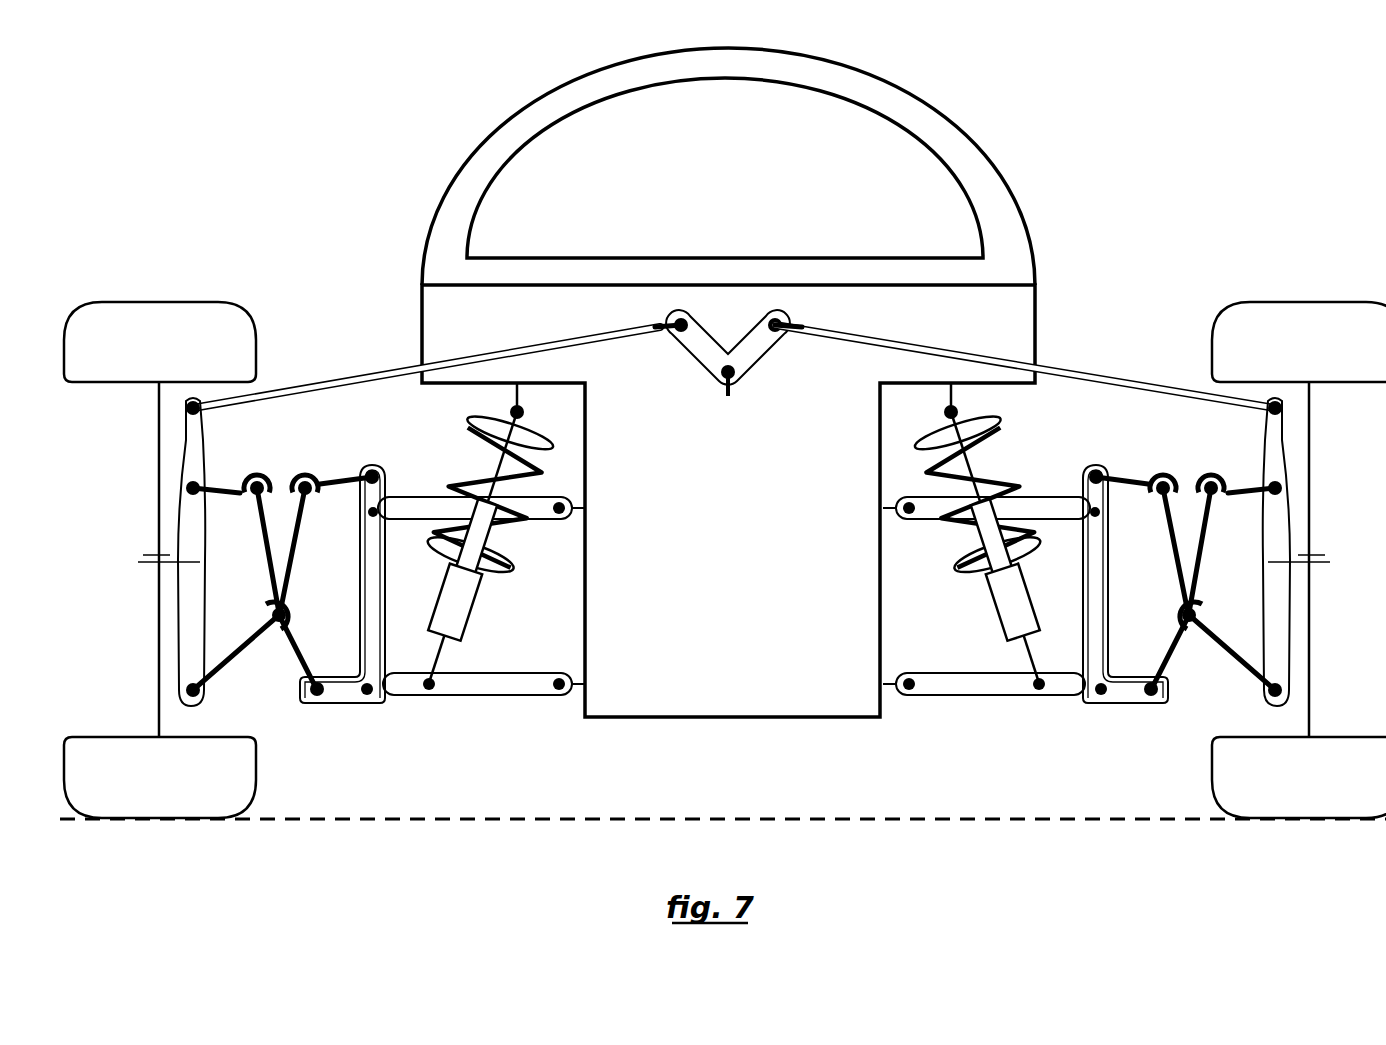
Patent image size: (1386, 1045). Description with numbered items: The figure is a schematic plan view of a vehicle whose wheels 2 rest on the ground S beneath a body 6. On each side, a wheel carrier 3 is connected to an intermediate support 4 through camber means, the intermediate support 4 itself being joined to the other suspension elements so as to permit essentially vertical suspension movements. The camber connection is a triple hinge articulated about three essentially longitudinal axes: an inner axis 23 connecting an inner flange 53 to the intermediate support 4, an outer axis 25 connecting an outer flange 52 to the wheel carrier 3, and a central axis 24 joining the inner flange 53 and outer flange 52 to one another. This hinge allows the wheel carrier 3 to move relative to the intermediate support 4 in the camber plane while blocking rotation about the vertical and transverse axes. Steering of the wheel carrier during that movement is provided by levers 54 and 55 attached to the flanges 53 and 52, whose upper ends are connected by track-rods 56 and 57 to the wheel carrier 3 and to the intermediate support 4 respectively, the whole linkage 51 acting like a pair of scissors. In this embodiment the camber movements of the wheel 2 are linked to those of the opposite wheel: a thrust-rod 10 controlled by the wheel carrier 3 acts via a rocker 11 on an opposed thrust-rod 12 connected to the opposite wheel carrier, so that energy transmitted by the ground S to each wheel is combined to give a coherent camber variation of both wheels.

The wheel 2 is at (157, 668).
The wheel carrier 3 is at (183, 602).
The intermediate support 4 is at (373, 648).
The vehicle body / cabin 6 is at (711, 189).
The thrust-rod 10 is at (560, 346).
The rocker 11 is at (762, 350).
The opposed thrust-rod 12 is at (940, 346).
The inner axis 23 is at (327, 698).
The central axis 24 is at (300, 620).
The outer axis 25 is at (185, 690).
The articulated linkage assembly 51 is at (282, 594).
The outer flange 52 is at (240, 647).
The inner flange 53 is at (296, 665).
The lever 54 is at (265, 528).
The lever 55 is at (293, 546).
The track-rod 56 is at (228, 488).
The track-rod 57 is at (340, 482).
The ground S is at (505, 818).